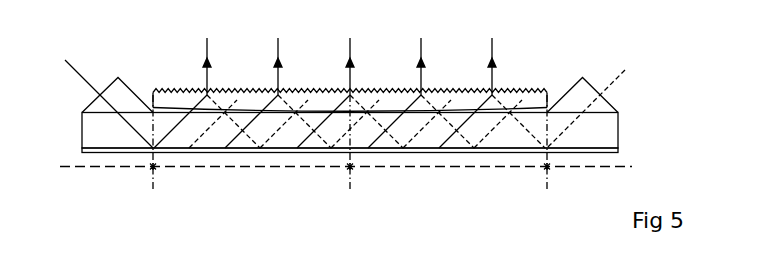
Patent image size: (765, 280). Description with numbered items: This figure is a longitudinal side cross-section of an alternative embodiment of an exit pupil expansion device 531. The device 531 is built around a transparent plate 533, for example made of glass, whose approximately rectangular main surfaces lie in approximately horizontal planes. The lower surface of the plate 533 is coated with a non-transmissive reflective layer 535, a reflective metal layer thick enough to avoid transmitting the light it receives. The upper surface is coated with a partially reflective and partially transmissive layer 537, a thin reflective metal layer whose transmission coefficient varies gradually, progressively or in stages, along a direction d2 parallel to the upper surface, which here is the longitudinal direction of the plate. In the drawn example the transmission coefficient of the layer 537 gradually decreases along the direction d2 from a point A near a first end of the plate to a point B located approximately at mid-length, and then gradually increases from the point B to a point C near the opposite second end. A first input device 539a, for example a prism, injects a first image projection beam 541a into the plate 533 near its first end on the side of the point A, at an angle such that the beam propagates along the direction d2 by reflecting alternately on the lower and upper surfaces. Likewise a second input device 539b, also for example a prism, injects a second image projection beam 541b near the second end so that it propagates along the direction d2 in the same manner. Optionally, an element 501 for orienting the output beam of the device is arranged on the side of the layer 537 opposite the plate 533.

The element of orientation of the output beam 501 is at (317, 103).
The exit pupil expansion device 531 is at (249, 59).
The transparent plate 533 is at (92, 130).
The non-transmissive reflective layer 535 is at (120, 153).
The partially reflective and partially transmissive layer 537 is at (213, 110).
The first input device 539a is at (106, 85).
The second input device 539b is at (592, 85).
The first image projection beam 541a is at (74, 66).
The second image projection beam 541b is at (626, 71).
The direction d2 is at (427, 170).
The point A is at (157, 168).
The point B is at (354, 168).
The point C is at (551, 168).